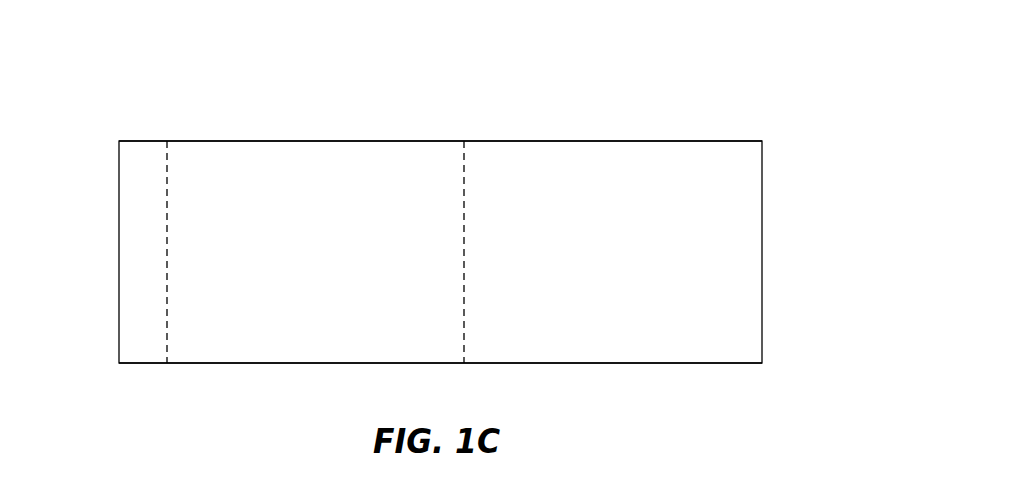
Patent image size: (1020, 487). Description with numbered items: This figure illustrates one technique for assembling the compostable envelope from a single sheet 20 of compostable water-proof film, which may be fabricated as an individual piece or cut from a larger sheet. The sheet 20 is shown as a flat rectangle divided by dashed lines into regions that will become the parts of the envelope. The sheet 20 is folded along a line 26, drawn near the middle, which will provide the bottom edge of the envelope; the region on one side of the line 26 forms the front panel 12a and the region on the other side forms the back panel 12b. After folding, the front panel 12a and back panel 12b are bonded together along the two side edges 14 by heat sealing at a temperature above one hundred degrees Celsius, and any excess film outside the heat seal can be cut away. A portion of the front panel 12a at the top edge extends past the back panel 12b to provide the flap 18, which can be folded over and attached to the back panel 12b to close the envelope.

The single sheet 20 is at (747, 93).
The front panel 12a is at (338, 332).
The back panel 12b is at (679, 348).
The side edges 14 is at (287, 141).
The flap 18 is at (142, 170).
The fold line 26 is at (464, 202).